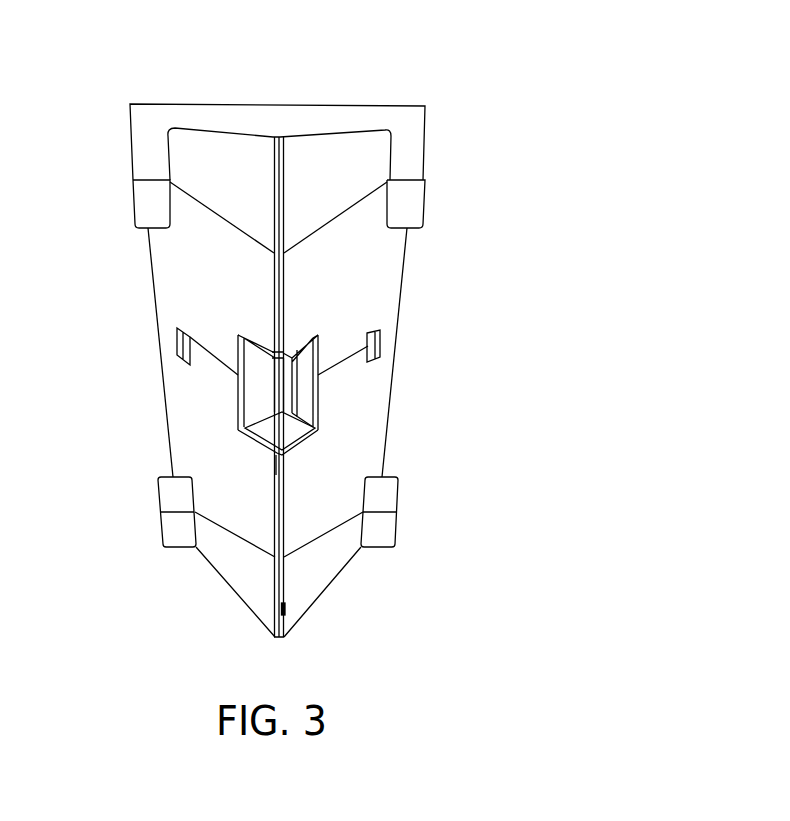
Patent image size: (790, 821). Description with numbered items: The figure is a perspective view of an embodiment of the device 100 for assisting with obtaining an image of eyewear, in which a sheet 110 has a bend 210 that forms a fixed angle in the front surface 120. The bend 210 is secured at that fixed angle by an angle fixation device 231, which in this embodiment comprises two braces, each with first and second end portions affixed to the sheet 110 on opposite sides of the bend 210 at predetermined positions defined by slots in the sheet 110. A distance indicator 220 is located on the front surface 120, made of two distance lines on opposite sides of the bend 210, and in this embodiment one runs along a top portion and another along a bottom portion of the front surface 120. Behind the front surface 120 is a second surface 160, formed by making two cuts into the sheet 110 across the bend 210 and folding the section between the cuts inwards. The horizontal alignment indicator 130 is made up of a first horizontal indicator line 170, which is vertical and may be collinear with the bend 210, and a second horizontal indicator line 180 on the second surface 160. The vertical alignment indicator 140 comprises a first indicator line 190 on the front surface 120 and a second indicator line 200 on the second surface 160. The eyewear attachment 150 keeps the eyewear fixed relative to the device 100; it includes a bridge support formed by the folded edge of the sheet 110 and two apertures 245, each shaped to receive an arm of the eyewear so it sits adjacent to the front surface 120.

The device 100 is at (567, 79).
The sheet 110 is at (352, 131).
The front surface 120 is at (370, 233).
The horizontal alignment indicator 130 is at (306, 472).
The vertical alignment indicator 140 is at (222, 384).
The eyewear attachment 150 is at (308, 440).
The second surface 160 is at (310, 403).
The first horizontal indicator line 170 is at (276, 474).
The second horizontal indicator line 180 is at (265, 390).
The first indicator line 190 is at (350, 352).
The second indicator line 200 is at (297, 367).
The bend 210 is at (286, 612).
The distance indicator 220 is at (222, 241).
The angle fixation device 231 is at (147, 200).
The apertures 245 is at (175, 329).